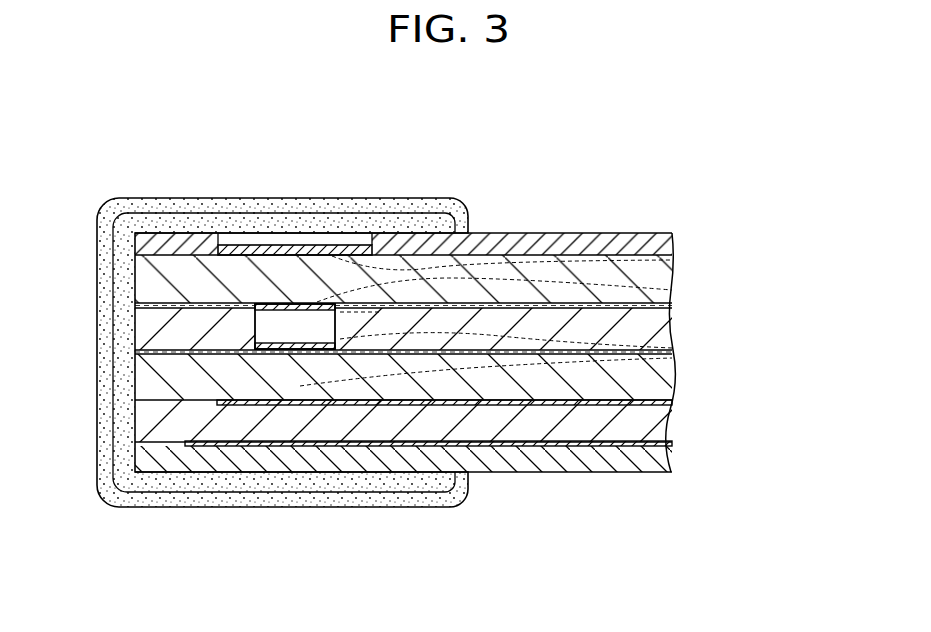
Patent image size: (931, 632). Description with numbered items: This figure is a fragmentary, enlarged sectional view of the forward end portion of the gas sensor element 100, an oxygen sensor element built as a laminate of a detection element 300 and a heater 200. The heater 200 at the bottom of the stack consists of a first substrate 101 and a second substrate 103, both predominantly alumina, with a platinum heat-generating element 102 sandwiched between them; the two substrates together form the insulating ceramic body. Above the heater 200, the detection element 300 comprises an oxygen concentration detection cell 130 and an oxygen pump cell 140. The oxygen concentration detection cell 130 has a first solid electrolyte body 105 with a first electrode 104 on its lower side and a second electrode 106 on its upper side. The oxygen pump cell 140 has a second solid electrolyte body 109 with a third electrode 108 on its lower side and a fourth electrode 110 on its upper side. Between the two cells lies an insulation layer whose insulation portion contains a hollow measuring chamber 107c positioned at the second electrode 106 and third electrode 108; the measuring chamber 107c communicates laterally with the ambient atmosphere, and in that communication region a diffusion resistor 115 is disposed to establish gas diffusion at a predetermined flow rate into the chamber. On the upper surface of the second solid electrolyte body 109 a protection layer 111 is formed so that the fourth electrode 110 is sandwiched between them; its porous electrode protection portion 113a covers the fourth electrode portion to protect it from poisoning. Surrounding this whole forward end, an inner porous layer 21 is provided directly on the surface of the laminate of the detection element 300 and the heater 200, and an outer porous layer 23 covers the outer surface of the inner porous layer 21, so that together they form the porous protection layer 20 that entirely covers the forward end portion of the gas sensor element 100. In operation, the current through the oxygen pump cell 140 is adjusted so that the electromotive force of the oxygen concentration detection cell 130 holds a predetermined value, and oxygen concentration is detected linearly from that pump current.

The gas sensor element 100 is at (603, 144).
The porous protection layer 20 is at (450, 576).
The inner porous layer 21 is at (355, 492).
The outer porous layer 23 is at (437, 500).
The detection element 300 is at (813, 257).
The oxygen pump cell 140 is at (758, 233).
The oxygen concentration detection cell 130 is at (758, 335).
The heater 200 is at (758, 432).
The fourth electrode 110 is at (674, 250).
The second solid electrolyte body 109 is at (655, 287).
The third electrode 108 is at (672, 306).
The measuring chamber 107c is at (349, 334).
The diffusion resistor 115 is at (280, 329).
The second electrode 106 is at (672, 353).
The first solid electrolyte body 105 is at (660, 382).
The first electrode 104 is at (672, 404).
The second substrate 103 is at (662, 423).
The heat-generating element 102 is at (677, 447).
The first substrate 101 is at (652, 472).
The protection layer 111 is at (671, 234).
The porous electrode protection portion 113a is at (318, 245).